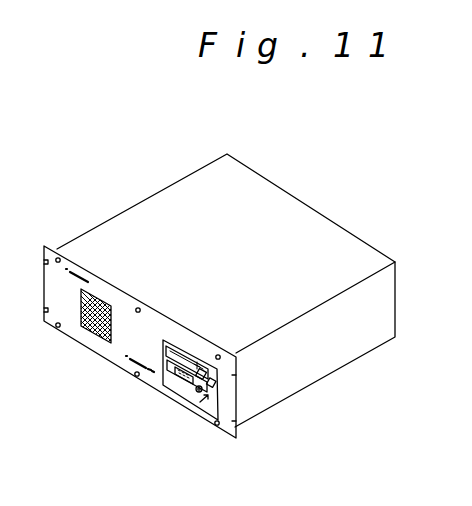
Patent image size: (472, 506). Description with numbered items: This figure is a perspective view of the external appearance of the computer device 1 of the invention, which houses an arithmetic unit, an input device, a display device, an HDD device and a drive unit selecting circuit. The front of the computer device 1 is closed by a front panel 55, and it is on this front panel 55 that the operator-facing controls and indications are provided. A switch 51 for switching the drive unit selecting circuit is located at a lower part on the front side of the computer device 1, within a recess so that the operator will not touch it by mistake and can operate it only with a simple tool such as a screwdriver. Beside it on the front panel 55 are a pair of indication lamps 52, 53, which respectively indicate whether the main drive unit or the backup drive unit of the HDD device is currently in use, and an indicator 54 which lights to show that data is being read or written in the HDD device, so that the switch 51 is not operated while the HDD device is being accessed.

The computer device 1 is at (311, 201).
The switch 51 is at (193, 408).
The indication lamp 52 is at (201, 368).
The indication lamp 53 is at (212, 378).
The indicator 54 is at (175, 340).
The front panel 55 is at (124, 320).